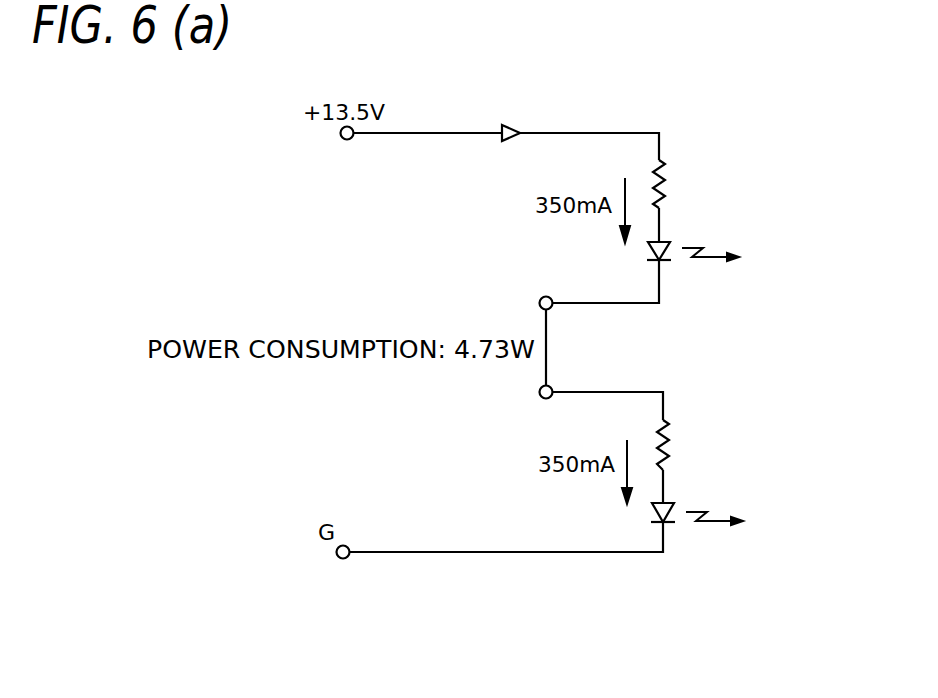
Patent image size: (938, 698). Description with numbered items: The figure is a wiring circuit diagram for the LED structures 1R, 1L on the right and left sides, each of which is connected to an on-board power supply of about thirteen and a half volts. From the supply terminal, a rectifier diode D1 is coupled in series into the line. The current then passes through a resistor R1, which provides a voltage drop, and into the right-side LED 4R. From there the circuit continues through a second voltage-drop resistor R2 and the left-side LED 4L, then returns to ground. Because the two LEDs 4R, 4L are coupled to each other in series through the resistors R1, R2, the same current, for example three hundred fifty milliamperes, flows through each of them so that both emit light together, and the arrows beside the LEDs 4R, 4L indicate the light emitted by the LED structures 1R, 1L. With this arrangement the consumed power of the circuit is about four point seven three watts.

The rectifier diode D1 is at (502, 125).
The resistor R1 is at (667, 190).
The resistor R2 is at (671, 448).
The right-side LED 4R is at (664, 263).
The left-side LED 4L is at (668, 525).
The right-side LED structure 1R is at (796, 238).
The left-side LED structure 1L is at (799, 502).